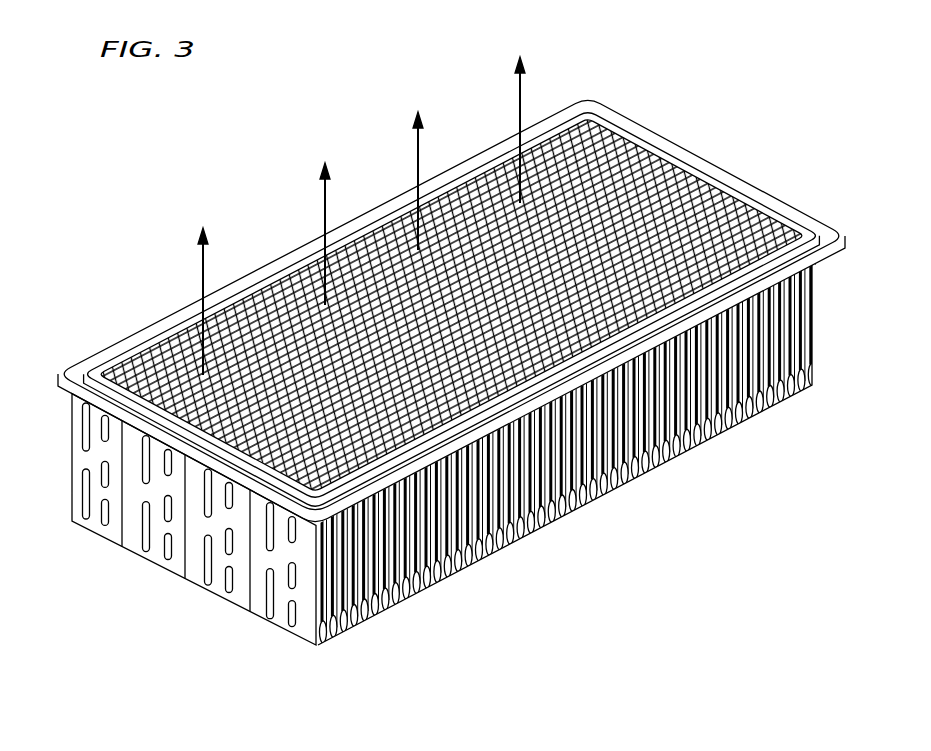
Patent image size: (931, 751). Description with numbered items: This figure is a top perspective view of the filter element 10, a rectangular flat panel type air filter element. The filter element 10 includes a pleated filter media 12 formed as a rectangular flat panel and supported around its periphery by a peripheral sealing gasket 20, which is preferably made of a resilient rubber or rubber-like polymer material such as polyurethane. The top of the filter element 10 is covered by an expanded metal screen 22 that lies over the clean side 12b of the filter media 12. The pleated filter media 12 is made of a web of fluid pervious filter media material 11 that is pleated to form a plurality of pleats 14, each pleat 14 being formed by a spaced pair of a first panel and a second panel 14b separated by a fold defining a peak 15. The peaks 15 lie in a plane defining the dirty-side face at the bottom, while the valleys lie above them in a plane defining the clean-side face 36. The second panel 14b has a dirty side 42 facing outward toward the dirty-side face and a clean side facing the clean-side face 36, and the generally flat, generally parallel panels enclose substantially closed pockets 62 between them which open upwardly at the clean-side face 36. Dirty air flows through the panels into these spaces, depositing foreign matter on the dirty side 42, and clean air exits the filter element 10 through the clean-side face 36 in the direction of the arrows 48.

The filter element 10 is at (86, 241).
The fluid pervious filter media material 11 is at (82, 466).
The pleated filter media 12 is at (595, 518).
The clean side 12b is at (110, 363).
The pleats 14 is at (472, 562).
The second panel 14b is at (158, 540).
The peaks 15 is at (533, 527).
The peripheral sealing gasket 20 is at (372, 205).
The expanded metal screen 22 is at (275, 302).
The clean-side face 36 is at (655, 205).
The dirty side of second panel 42 is at (283, 606).
The arrows 48 is at (322, 198).
The pockets 62 is at (408, 598).